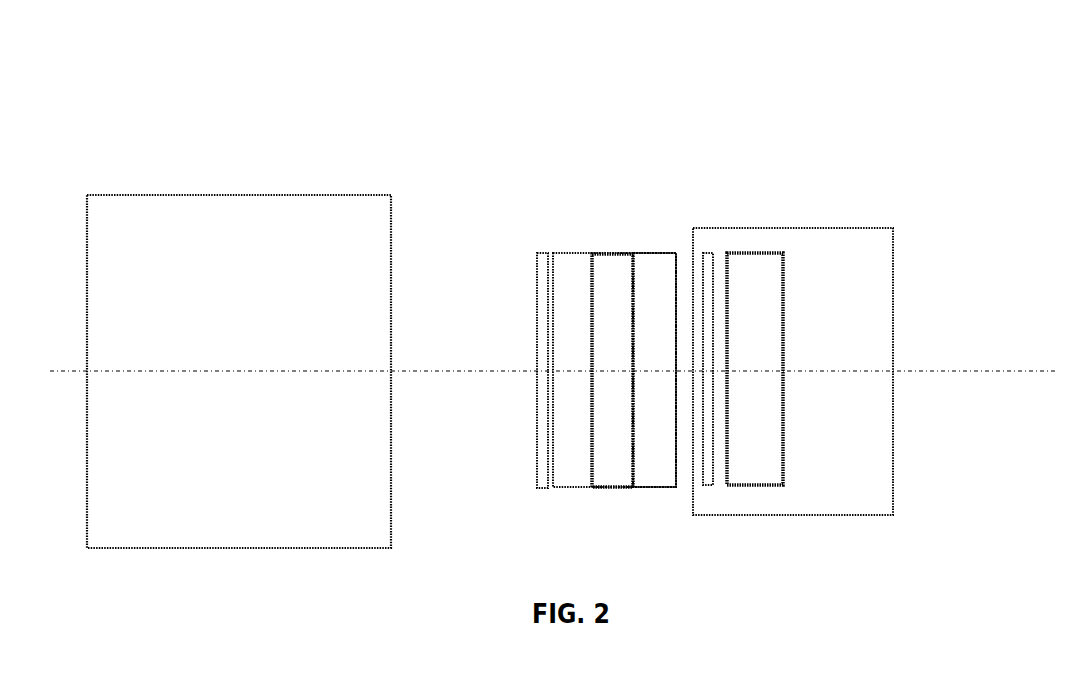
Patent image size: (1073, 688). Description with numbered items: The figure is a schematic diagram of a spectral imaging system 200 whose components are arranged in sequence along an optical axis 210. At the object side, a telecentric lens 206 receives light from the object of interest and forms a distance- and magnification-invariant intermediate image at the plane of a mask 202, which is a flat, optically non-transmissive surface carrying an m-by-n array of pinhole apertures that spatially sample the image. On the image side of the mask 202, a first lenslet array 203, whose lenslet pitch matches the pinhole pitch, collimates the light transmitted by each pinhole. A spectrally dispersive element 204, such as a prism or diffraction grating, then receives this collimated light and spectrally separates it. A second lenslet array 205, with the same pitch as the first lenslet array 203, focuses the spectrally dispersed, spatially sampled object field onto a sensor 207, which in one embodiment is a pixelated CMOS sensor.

The spectral imaging system 200 is at (915, 122).
The mask 202 is at (537, 270).
The first lenslet array 203 is at (558, 253).
The spectrally dispersive element 204 is at (601, 254).
The second lenslet array 205 is at (652, 253).
The telecentric lens 206 is at (179, 195).
The sensor 207 is at (803, 228).
The optical axis 210 is at (986, 370).